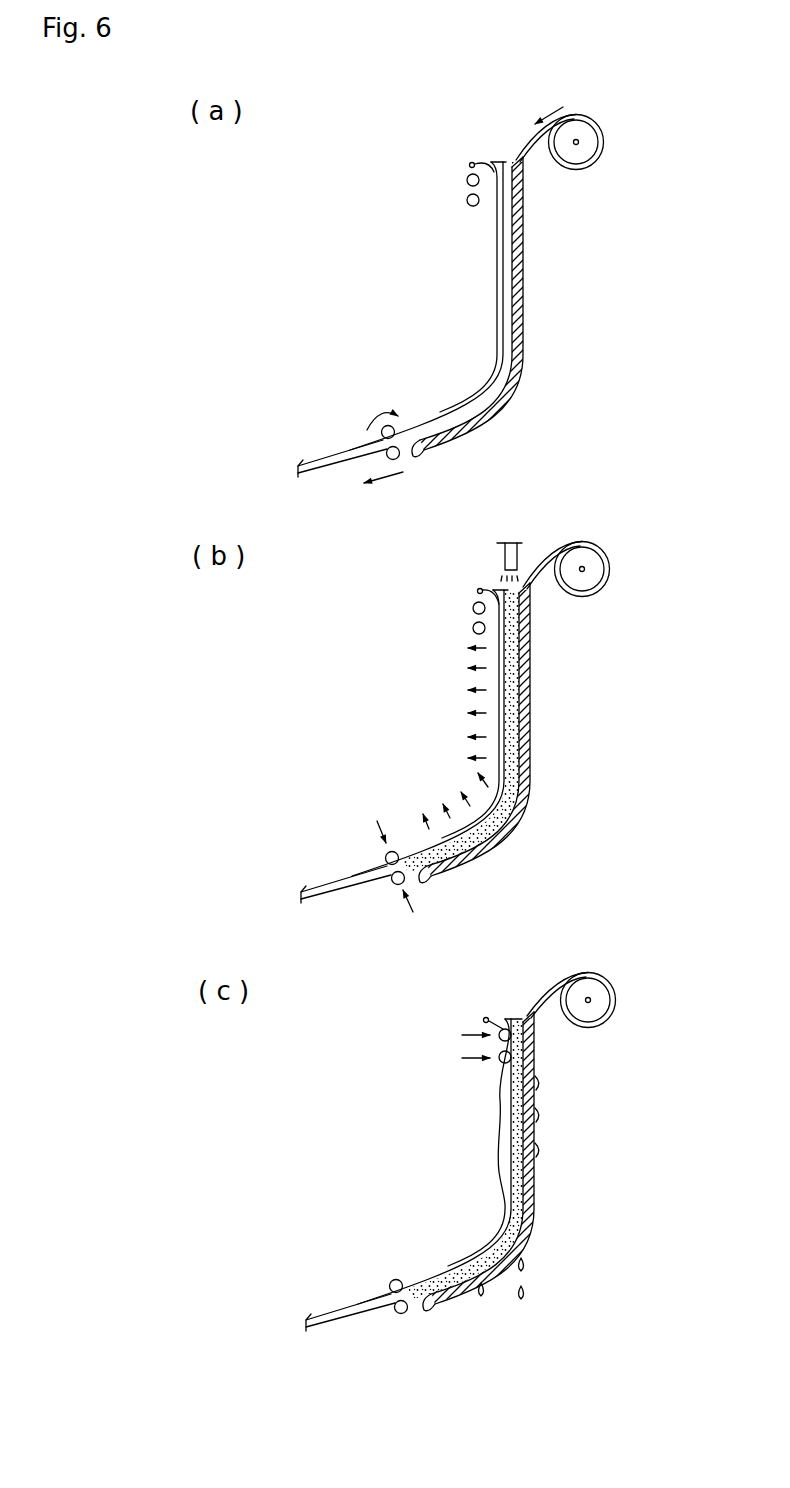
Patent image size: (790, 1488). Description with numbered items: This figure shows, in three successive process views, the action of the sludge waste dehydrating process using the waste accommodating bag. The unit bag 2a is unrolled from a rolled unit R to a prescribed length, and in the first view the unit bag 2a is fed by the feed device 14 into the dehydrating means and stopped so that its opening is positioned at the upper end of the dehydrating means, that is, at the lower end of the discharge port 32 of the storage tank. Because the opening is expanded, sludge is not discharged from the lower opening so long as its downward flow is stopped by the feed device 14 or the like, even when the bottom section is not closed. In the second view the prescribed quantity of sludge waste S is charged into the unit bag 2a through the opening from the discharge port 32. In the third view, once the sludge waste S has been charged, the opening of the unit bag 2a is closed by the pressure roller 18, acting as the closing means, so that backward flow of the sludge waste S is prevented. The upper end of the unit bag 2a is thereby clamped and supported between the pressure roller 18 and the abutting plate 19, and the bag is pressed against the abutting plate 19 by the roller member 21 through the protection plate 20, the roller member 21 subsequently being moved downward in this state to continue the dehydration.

The rolled unit R is at (618, 128).
The pressure roller 18 is at (467, 176).
The roller member 21 is at (466, 200).
The unit bag 2a is at (502, 264).
The protection plate 20 is at (496, 306).
The abutting plate 19 is at (525, 316).
The feed device 14 is at (352, 430).
The discharge port 32 is at (500, 558).
The sludge waste S is at (514, 684).